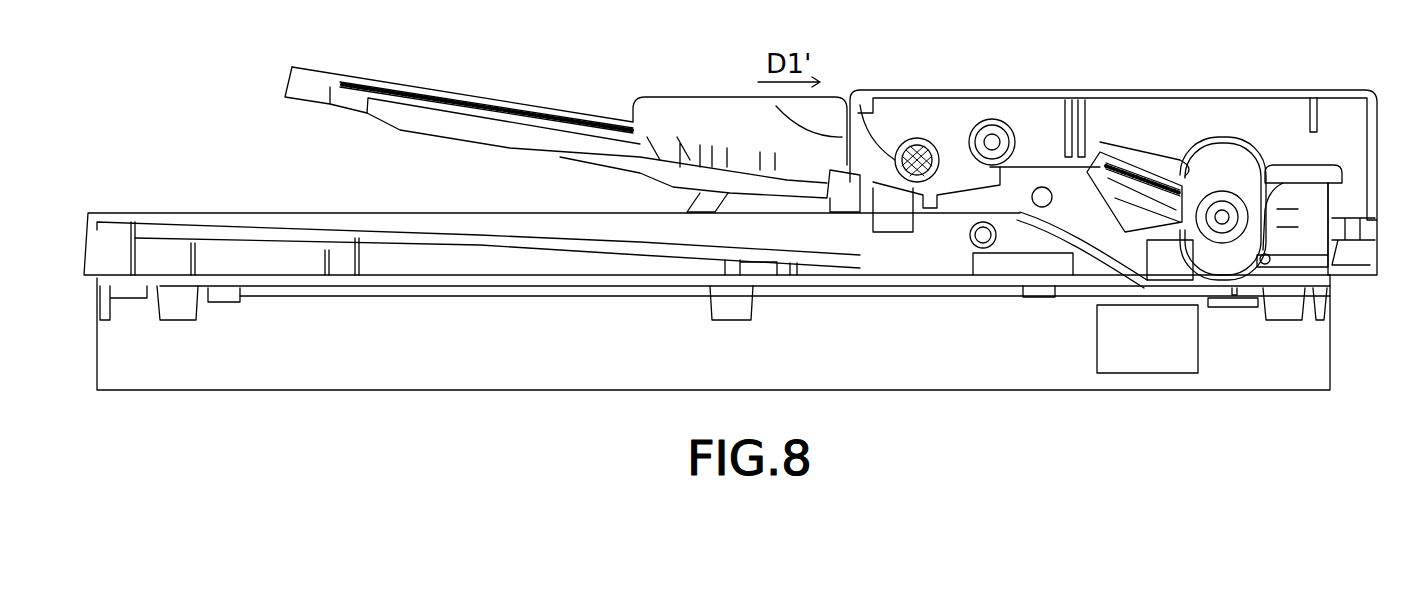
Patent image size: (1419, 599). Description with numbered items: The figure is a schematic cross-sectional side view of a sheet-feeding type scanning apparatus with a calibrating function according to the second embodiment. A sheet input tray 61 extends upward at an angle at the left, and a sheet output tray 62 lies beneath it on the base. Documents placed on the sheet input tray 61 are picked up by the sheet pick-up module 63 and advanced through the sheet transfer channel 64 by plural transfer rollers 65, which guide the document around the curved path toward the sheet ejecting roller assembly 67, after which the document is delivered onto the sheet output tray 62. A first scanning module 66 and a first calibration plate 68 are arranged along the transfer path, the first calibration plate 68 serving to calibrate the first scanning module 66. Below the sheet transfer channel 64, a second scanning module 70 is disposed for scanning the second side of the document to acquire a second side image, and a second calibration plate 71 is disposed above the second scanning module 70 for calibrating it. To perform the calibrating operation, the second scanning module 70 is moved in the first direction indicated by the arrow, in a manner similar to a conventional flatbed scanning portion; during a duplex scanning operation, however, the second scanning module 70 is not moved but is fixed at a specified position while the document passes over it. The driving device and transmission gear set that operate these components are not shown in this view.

The sheet input tray 61 is at (512, 113).
The sheet output tray 62 is at (497, 215).
The sheet pick-up module 63 is at (988, 128).
The sheet transfer channel 64 is at (1073, 127).
The transfer rollers 65 is at (1058, 188).
The first scanning module 66 is at (1103, 195).
The sheet ejecting roller assembly 67 is at (975, 240).
The first calibration plate 68 is at (1133, 147).
The second scanning module 70 is at (1145, 363).
The second calibration plate 71 is at (1230, 307).